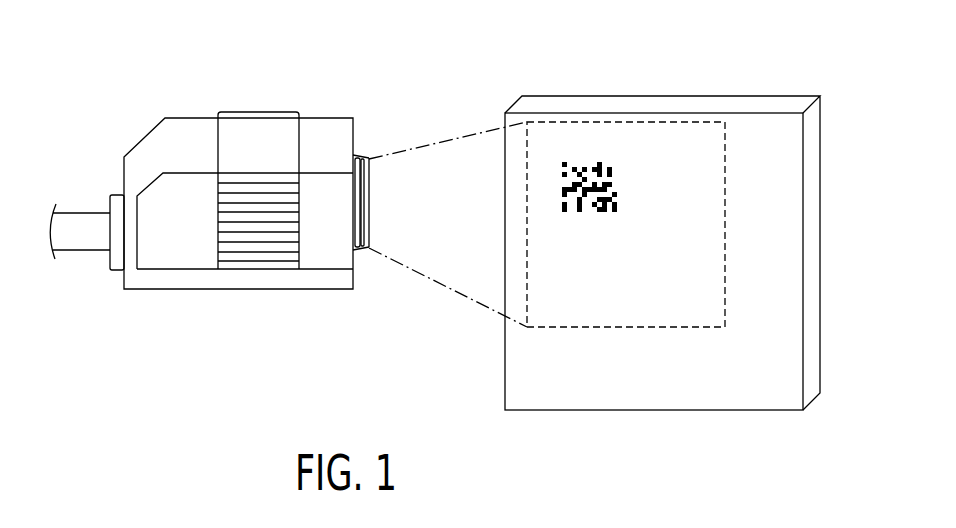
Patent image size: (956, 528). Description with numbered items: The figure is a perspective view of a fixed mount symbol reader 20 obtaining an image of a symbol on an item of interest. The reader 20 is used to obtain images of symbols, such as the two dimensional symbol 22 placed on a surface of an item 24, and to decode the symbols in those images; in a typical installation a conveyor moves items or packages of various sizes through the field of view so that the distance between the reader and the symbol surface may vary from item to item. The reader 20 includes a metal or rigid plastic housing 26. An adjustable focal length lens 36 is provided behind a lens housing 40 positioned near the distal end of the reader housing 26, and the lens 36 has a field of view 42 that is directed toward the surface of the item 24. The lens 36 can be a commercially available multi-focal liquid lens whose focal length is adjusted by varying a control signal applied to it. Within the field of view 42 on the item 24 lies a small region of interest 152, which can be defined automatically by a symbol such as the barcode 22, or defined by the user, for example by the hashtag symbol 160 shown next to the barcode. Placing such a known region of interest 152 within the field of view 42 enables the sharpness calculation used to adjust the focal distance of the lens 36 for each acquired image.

The fixed mount symbol reader 20 is at (131, 76).
The housing 26 is at (208, 118).
The adjustable focal length lens 36 is at (377, 196).
The lens housing 40 is at (370, 223).
The field of view 42 is at (527, 226).
The item 24 is at (747, 133).
The two dimensional symbol 22 is at (588, 162).
The hashtag symbol 160 is at (643, 137).
The region of interest 152 is at (632, 163).